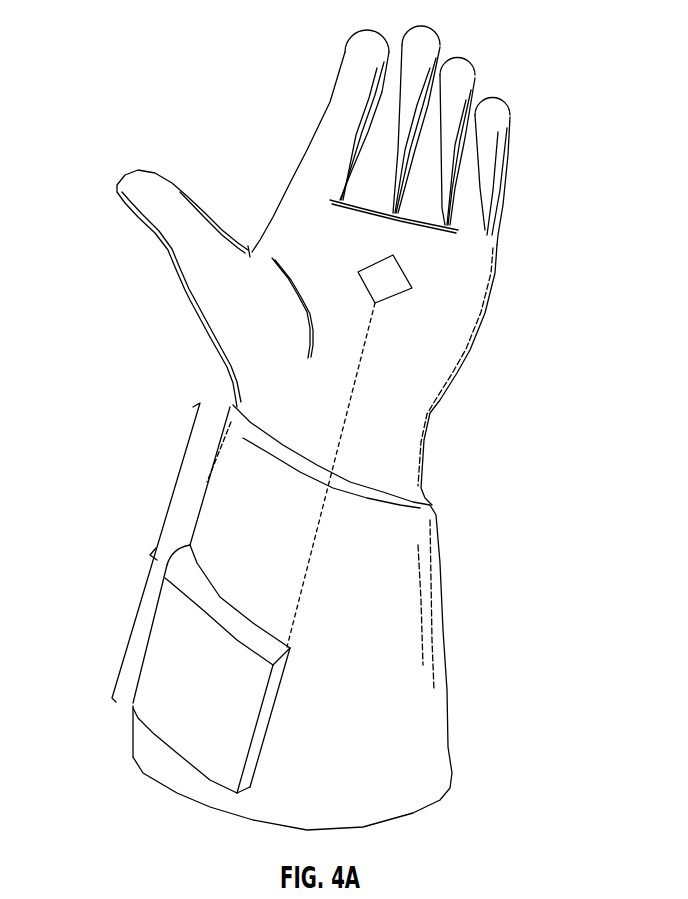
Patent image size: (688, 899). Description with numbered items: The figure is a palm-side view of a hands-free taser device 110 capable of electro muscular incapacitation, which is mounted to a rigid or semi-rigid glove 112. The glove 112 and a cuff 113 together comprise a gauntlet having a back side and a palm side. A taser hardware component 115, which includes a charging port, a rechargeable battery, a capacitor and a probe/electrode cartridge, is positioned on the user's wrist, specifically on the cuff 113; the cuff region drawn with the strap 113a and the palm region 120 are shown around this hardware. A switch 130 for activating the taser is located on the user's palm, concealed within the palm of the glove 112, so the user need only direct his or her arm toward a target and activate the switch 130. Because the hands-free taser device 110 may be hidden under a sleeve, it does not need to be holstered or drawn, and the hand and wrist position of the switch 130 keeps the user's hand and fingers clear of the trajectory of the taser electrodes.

The hands-free taser device 110 is at (114, 124).
The glove 112 is at (462, 60).
The hand portion 120 is at (384, 410).
The switch 130 is at (452, 259).
The cuff 113 is at (443, 635).
The cuff strap 113a is at (151, 556).
The taser hardware component 115 is at (88, 591).